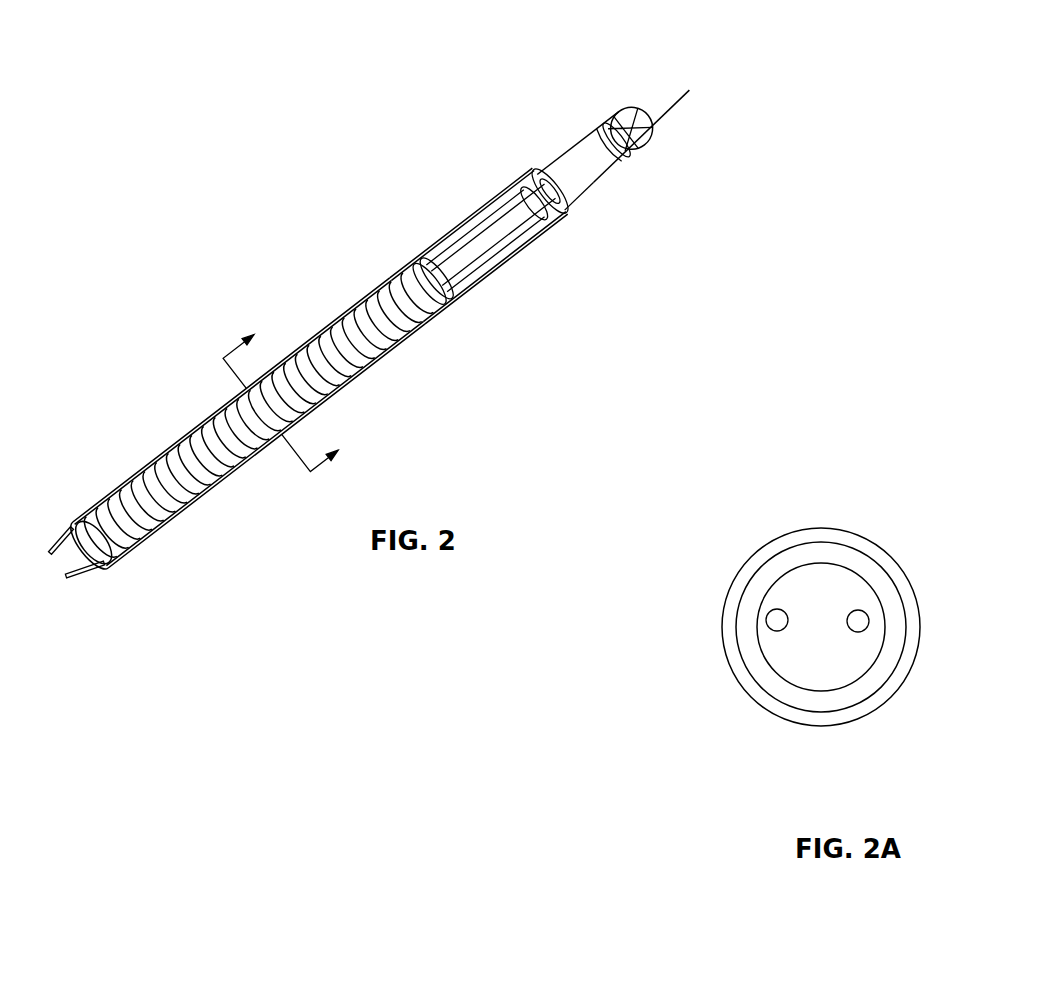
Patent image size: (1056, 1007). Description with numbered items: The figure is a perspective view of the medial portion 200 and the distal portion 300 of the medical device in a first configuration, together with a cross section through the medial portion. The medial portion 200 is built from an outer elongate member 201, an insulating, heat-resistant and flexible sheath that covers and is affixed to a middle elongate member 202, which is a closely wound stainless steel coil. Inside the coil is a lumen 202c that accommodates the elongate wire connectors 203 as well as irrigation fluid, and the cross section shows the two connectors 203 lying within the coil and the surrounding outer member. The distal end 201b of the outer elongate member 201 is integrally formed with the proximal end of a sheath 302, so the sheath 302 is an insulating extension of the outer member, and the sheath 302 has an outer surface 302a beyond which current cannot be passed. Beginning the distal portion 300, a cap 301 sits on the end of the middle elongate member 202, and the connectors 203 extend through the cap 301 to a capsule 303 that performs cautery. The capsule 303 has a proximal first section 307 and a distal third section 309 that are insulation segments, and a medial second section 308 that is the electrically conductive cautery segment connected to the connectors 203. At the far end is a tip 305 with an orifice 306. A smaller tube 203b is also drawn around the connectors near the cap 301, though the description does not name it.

In FIG. 2, the medial portion 200 is at (190, 302).
In FIG. 2, the outer elongate member 201 is at (216, 486).
In FIG. 2A, the outer elongate member 201 is at (836, 535).
In FIG. 2, the distal end of outer elongate member 201b is at (395, 277).
In FIG. 2, the middle elongate member 202 is at (153, 532).
In FIG. 2A, the middle elongate member 202 is at (880, 588).
In FIG. 2A, the lumen 202c is at (805, 662).
In FIG. 2, the elongate wire connectors 203 is at (63, 545).
In FIG. 2A, the elongate wire connectors 203 is at (770, 614).
In FIG. 2, the wire sheath 203b is at (486, 212).
In FIG. 2, the distal portion 300 is at (580, 247).
In FIG. 2, the cap 301 is at (437, 290).
In FIG. 2, the sheath 302 is at (468, 284).
In FIG. 2, the outer surface of sheath 302a is at (440, 284).
In FIG. 2, the capsule 303 is at (558, 128).
In FIG. 2, the tip 305 is at (652, 136).
In FIG. 2, the orifice 306 is at (655, 130).
In FIG. 2, the first section 307 is at (568, 207).
In FIG. 2, the second section 308 is at (590, 182).
In FIG. 2, the third section 309 is at (595, 130).